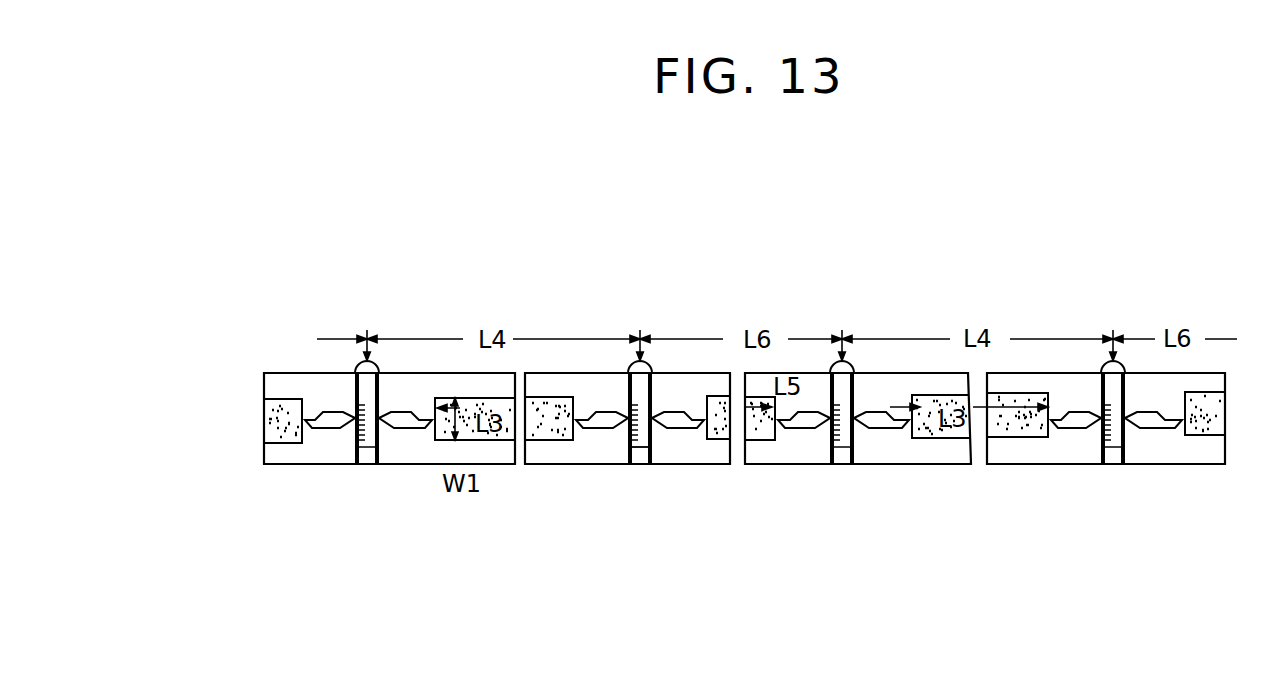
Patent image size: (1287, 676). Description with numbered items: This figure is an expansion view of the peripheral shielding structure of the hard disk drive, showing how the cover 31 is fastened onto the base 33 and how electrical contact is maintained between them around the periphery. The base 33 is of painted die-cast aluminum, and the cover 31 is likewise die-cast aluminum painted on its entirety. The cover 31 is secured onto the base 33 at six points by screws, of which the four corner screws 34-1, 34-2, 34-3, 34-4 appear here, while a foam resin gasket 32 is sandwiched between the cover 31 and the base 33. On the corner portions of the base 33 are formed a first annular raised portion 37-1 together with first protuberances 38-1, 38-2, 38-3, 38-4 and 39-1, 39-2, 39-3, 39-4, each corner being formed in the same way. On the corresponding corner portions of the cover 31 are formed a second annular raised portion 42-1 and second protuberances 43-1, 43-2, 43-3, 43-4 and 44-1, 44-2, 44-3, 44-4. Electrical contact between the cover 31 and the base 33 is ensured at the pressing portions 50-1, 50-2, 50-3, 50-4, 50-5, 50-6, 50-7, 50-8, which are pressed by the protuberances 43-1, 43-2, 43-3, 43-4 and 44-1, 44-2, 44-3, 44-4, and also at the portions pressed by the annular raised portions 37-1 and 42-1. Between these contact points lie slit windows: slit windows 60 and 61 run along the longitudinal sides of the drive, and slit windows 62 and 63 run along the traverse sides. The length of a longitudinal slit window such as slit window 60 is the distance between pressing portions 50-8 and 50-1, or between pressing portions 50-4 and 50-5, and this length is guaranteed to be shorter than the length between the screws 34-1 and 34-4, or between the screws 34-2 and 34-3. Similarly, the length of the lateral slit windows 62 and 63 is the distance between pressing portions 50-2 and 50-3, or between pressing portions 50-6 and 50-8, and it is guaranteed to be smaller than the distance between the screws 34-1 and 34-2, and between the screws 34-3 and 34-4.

The cover 31 is at (1210, 373).
The foam resin gasket 32 is at (505, 440).
The base 33 is at (266, 465).
The screw 34-1 is at (652, 368).
The screw 34-2 is at (855, 368).
The screw 34-3 is at (1126, 368).
The screw 34-4 is at (380, 370).
The first annular raised portion 37-1 is at (653, 450).
The first protuberance 38-1 is at (680, 428).
The first protuberance 38-2 is at (782, 428).
The first protuberance 38-3 is at (1052, 428).
The first protuberance 38-4 is at (305, 432).
The first protuberance 39-1 is at (600, 428).
The first protuberance 39-2 is at (882, 428).
The first protuberance 39-3 is at (1163, 428).
The first protuberance 39-4 is at (428, 424).
The second annular raised portion 42-1 is at (660, 410).
The second protuberance 43-1 is at (690, 418).
The second protuberance 43-2 is at (788, 418).
The second protuberance 43-3 is at (1053, 418).
The second protuberance 43-4 is at (312, 416).
The second protuberance 44-1 is at (590, 398).
The second protuberance 44-2 is at (893, 398).
The second protuberance 44-3 is at (1170, 398).
The second protuberance 44-4 is at (420, 398).
The pressing portion 50-1 is at (580, 422).
The pressing portion 50-2 is at (700, 422).
The pressing portion 50-3 is at (800, 422).
The pressing portion 50-4 is at (903, 422).
The pressing portion 50-5 is at (1068, 422).
The pressing portion 50-6 is at (1172, 422).
The pressing portion 50-7 is at (310, 422).
The pressing portion 50-8 is at (424, 430).
The slit window 60 is at (542, 430).
The slit window 61 is at (760, 430).
The slit window 62 is at (1016, 430).
The slit window 63 is at (1225, 463).